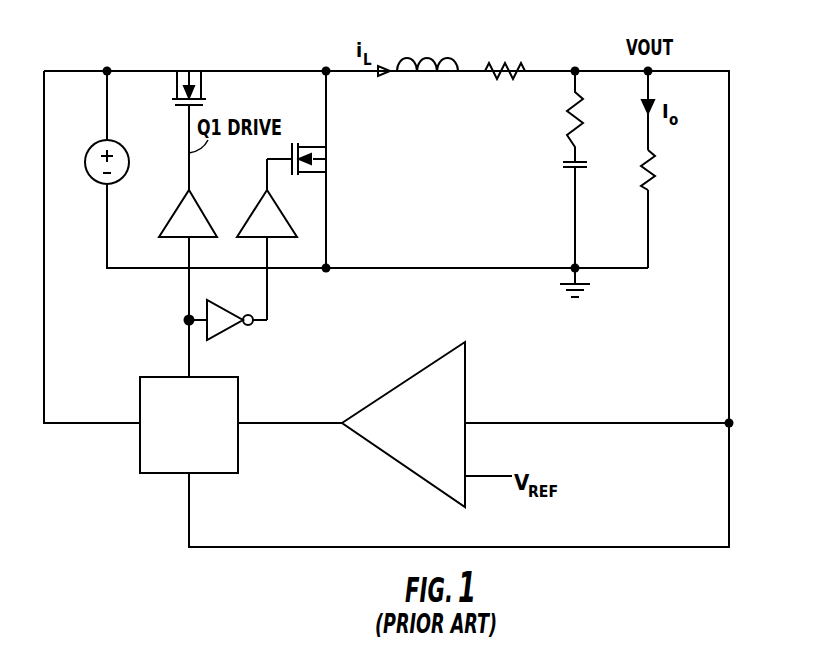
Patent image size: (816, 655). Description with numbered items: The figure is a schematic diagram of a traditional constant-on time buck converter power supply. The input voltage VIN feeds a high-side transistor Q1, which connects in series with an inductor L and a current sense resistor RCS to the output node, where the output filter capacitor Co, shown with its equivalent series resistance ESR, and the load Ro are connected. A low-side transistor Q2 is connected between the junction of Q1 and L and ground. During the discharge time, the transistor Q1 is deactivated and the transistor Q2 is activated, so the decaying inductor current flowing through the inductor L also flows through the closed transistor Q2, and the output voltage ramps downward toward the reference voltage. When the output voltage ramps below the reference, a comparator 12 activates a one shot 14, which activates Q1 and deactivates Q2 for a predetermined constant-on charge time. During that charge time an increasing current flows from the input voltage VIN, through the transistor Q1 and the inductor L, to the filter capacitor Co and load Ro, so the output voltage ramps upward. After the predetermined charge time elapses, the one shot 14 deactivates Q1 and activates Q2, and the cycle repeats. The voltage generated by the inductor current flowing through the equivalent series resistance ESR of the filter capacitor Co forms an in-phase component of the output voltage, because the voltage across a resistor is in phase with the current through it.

The comparator 12 is at (392, 388).
The one shot 14 is at (227, 377).
The transistor Q1 is at (183, 114).
The transistor Q2 is at (296, 142).
The inductor L is at (427, 53).
The current sense resistor RCS is at (505, 56).
The equivalent series resistance ESR is at (555, 116).
The filter capacitor Co is at (590, 167).
The load Ro is at (665, 170).
The input voltage VIN is at (128, 162).